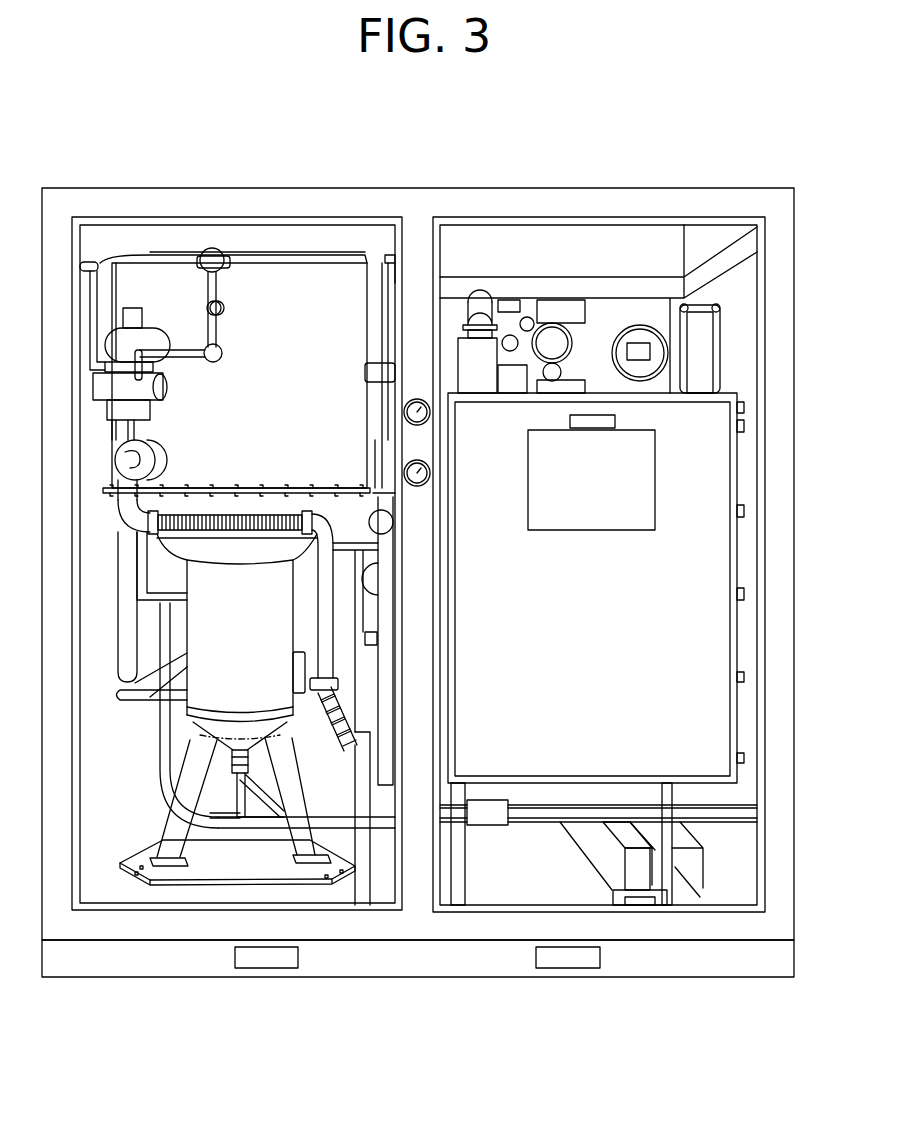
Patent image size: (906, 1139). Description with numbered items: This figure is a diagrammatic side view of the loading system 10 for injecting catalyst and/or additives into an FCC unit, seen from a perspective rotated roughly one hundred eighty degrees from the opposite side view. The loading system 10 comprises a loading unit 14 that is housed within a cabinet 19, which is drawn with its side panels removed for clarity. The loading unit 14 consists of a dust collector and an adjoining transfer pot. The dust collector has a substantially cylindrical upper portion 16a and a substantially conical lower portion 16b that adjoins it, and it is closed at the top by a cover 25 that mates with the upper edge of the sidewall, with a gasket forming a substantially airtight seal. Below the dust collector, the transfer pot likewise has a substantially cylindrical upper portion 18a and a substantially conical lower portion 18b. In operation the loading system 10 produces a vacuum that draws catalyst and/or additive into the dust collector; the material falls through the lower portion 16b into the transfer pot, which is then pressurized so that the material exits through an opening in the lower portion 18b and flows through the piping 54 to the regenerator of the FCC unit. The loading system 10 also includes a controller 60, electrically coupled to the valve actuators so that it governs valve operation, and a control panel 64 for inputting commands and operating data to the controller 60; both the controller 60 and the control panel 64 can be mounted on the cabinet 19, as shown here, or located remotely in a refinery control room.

The loading system 10 is at (650, 148).
The loading unit 14 is at (251, 243).
The upper portion 16a is at (308, 357).
The lower portion 16b is at (251, 548).
The upper portion 18a is at (244, 672).
The lower portion 18b is at (210, 735).
The cabinet 19 is at (775, 640).
The cover 25 is at (307, 253).
The piping 54 is at (253, 813).
The controller 60 is at (552, 785).
The control panel 64 is at (657, 458).